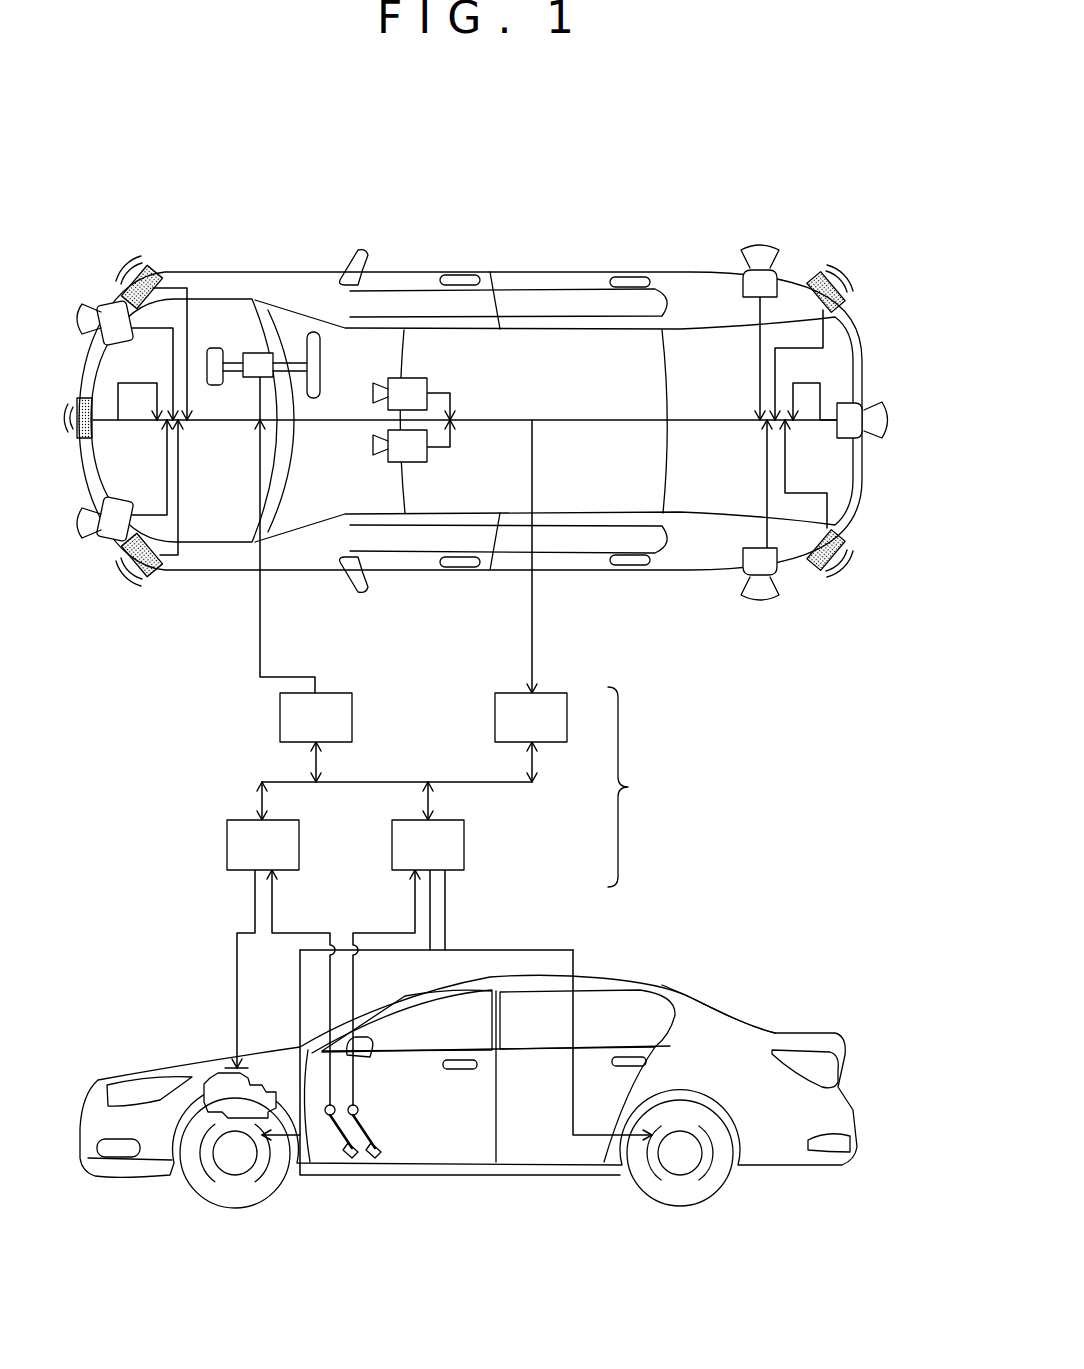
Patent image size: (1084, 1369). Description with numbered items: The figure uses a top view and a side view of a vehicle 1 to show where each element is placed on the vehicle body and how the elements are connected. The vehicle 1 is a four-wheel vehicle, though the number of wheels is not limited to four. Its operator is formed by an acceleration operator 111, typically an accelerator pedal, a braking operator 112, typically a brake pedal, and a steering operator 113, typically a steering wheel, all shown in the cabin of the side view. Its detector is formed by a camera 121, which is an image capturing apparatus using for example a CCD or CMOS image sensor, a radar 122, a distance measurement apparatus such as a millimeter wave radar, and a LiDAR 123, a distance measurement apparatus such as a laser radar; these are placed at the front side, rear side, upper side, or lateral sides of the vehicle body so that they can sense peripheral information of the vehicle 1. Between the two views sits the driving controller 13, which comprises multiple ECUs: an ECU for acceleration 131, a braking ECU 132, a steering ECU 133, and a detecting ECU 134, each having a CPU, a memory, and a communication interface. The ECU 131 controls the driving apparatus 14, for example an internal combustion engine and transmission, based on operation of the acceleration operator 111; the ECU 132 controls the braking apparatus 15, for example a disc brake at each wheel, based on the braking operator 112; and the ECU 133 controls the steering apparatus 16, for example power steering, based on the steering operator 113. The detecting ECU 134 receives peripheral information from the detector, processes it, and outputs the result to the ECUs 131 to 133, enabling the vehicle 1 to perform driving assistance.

The vehicle 1 is at (677, 227).
The acceleration operator 111 is at (360, 1160).
The braking operator 112 is at (382, 1157).
The steering operator 113 is at (320, 343).
The camera 121 is at (427, 380).
The radar 122 is at (152, 270).
The LiDAR 123 is at (103, 303).
The driving controller 13 is at (448, 787).
The ECU for acceleration 131 is at (243, 857).
The braking ECU 132 is at (408, 857).
The steering ECU 133 is at (296, 731).
The detecting ECU 134 is at (511, 731).
The driving apparatus 14 is at (213, 1078).
The braking apparatus 15 is at (237, 1176).
The steering apparatus 16 is at (260, 352).